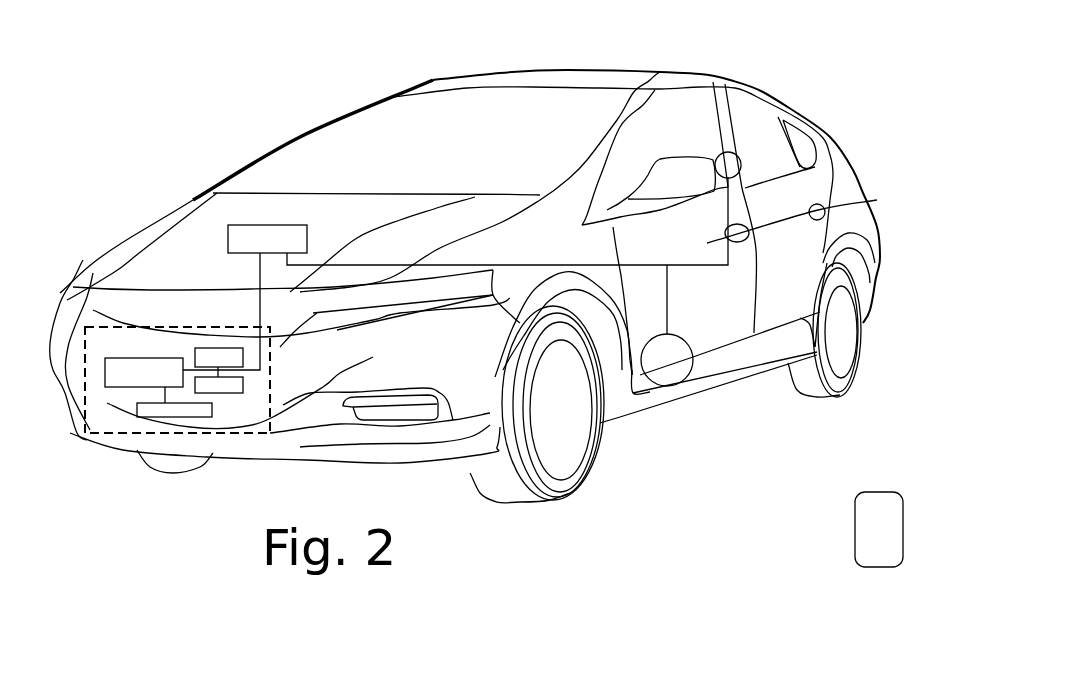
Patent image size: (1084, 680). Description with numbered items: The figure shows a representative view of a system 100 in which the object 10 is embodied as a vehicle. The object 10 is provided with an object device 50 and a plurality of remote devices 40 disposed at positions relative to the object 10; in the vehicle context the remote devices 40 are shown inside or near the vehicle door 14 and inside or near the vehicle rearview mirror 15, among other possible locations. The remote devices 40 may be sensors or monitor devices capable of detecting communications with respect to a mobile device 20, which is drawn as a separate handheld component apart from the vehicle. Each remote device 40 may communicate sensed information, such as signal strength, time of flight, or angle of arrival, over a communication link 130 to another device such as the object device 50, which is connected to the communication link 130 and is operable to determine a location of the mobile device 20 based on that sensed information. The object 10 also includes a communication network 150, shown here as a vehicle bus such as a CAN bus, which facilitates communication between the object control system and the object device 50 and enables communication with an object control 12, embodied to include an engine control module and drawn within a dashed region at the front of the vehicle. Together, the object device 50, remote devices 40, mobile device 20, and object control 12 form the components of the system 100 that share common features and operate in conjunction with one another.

The system 100 is at (846, 93).
The object 10 is at (429, 81).
The object control 12 is at (102, 433).
The vehicle door 14 is at (712, 299).
The vehicle rearview mirror 15 is at (686, 189).
The mobile device 20 is at (877, 492).
The remote device 40 is at (718, 158).
The object device 50 is at (275, 224).
The communication link 130 is at (530, 264).
The communication network 150 is at (260, 277).